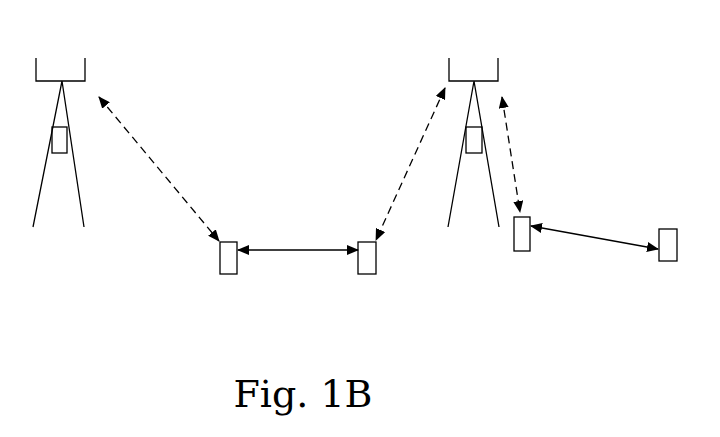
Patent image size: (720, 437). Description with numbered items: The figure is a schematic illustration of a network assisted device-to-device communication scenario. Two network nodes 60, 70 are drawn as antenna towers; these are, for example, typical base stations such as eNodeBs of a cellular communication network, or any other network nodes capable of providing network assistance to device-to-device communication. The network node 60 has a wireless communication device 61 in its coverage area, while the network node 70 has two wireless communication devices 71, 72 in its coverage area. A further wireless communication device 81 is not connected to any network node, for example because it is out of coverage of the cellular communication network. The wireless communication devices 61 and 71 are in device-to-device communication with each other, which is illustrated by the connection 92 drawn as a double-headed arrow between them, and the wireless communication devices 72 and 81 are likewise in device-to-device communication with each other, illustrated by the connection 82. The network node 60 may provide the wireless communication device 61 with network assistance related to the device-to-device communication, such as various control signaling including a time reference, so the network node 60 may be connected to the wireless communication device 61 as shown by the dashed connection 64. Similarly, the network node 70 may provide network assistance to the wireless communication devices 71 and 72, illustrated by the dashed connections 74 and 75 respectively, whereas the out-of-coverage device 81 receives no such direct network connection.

The network node 60 is at (36, 73).
The network node 70 is at (452, 73).
The wireless communication device 61 is at (232, 275).
The wireless communication device 71 is at (375, 275).
The wireless communication device 72 is at (531, 252).
The wireless communication device 81 is at (672, 262).
The connection 64 is at (147, 153).
The connection 74 is at (410, 172).
The connection 75 is at (512, 155).
The connection 92 is at (310, 250).
The connection 82 is at (612, 238).